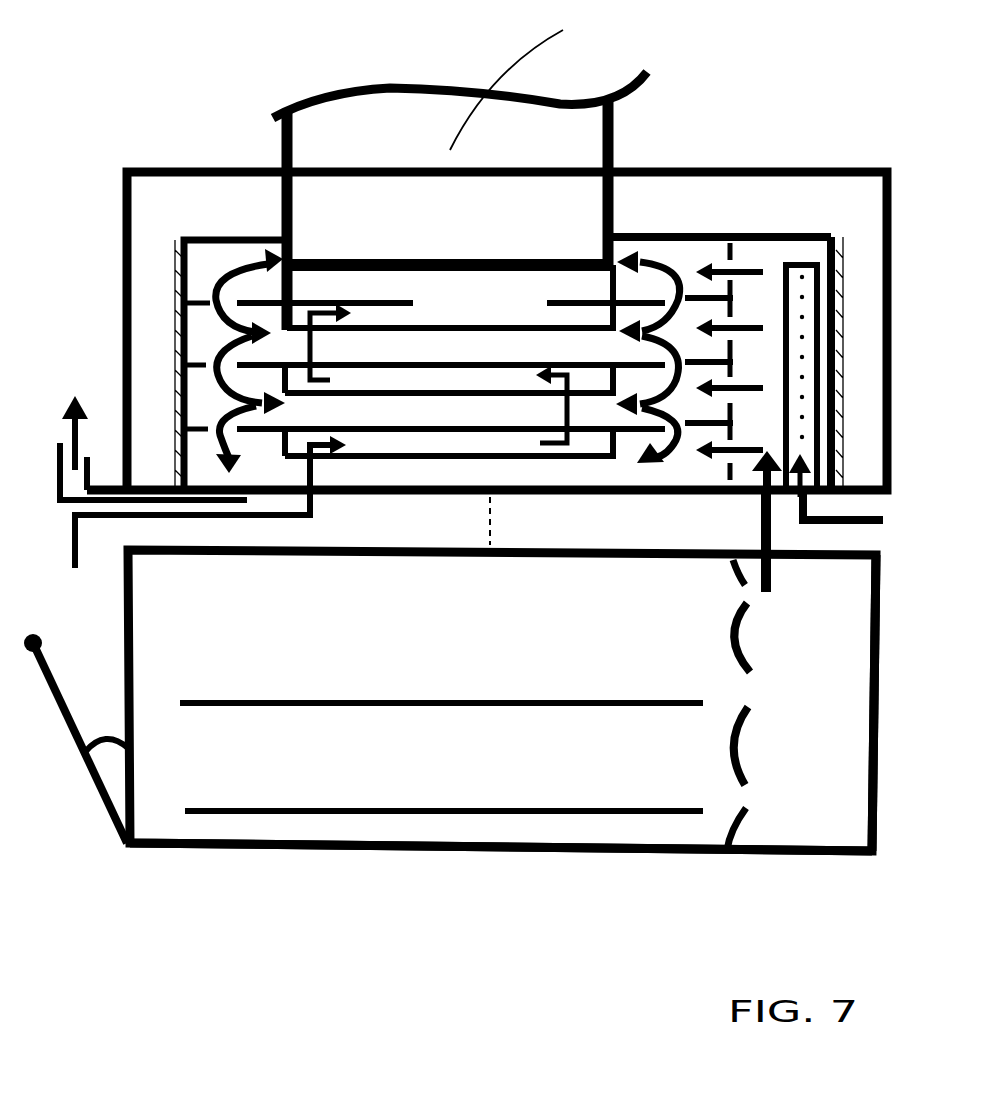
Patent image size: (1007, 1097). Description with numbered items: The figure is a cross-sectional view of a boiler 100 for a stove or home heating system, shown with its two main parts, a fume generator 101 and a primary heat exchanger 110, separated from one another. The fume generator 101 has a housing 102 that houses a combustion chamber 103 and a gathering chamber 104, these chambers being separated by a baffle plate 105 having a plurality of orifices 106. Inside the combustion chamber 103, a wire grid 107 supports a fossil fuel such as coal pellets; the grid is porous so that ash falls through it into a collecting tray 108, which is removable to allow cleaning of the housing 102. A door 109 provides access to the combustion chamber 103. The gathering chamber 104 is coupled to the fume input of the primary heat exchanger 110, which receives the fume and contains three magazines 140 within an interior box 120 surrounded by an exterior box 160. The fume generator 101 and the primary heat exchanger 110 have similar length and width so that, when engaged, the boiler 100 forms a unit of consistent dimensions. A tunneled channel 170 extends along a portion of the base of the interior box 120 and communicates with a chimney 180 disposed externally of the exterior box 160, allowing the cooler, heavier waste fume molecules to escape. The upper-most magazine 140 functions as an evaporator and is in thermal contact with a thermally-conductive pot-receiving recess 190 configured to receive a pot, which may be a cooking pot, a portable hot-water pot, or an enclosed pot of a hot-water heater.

The boiler 100 is at (714, 116).
The primary heat exchanger 110 is at (148, 160).
The interior box 120 is at (787, 232).
The magazines 140 is at (278, 280).
The exterior box 160 is at (832, 228).
The tunneled channel 170 is at (228, 500).
The chimney 180 is at (100, 445).
The pot-receiving recess 190 is at (680, 235).
The fume generator 101 is at (415, 874).
The housing 102 is at (205, 850).
The combustion chamber 103 is at (495, 735).
The gathering chamber 104 is at (798, 805).
The baffle plate 105 is at (725, 763).
The orifices 106 is at (747, 795).
The wire grid 107 is at (620, 710).
The collecting tray 108 is at (325, 815).
The door 109 is at (97, 780).